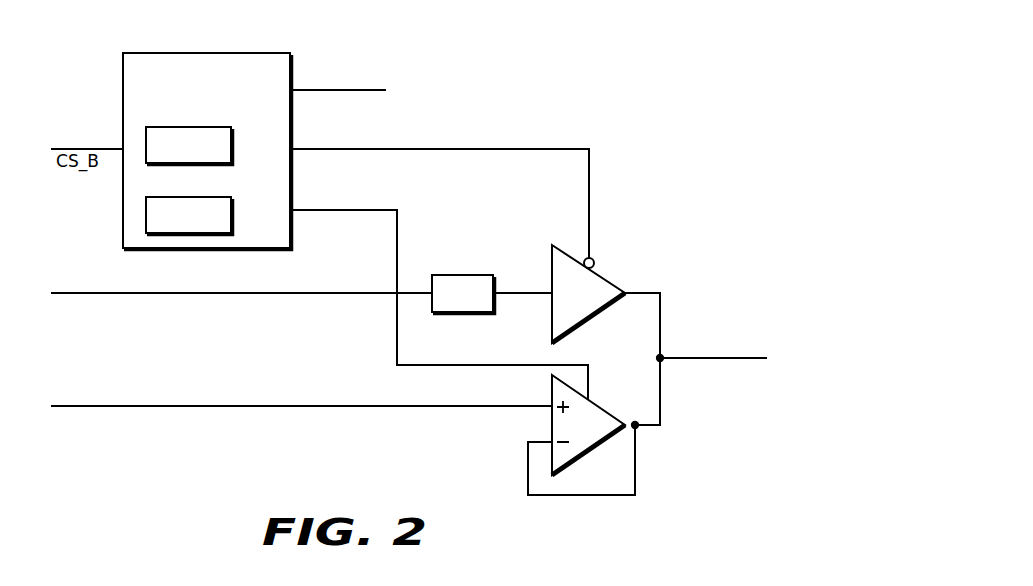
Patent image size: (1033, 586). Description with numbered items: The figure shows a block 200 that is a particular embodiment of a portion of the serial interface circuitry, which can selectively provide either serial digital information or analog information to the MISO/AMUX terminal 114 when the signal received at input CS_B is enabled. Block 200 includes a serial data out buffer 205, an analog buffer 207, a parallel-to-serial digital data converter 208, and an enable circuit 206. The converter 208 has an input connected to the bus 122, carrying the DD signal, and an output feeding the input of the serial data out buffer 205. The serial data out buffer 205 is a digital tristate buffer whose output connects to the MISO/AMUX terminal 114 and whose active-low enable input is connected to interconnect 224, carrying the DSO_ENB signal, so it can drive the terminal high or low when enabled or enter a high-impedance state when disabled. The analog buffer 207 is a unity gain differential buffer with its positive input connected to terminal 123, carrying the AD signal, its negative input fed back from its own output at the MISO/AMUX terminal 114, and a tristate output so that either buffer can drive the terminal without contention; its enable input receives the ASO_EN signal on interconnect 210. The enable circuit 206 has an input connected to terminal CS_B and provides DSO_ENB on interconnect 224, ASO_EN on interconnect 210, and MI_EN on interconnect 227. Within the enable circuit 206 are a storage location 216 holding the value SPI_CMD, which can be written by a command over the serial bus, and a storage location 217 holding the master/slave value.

The block 200 is at (673, 57).
The enable circuit 206 is at (258, 53).
The storage location 216 is at (197, 127).
The storage location 217 is at (197, 197).
The interconnect 227 is at (358, 90).
The interconnect 224 is at (372, 149).
The ASO_EN enable signal 210 is at (383, 210).
The bus 122 is at (137, 293).
The terminal 123 is at (136, 406).
The parallel-to-serial digital data converter 208 is at (474, 275).
The serial data out buffer 205 is at (607, 281).
The analog buffer 207 is at (608, 413).
The MISO/AMUX terminal 114 is at (679, 358).